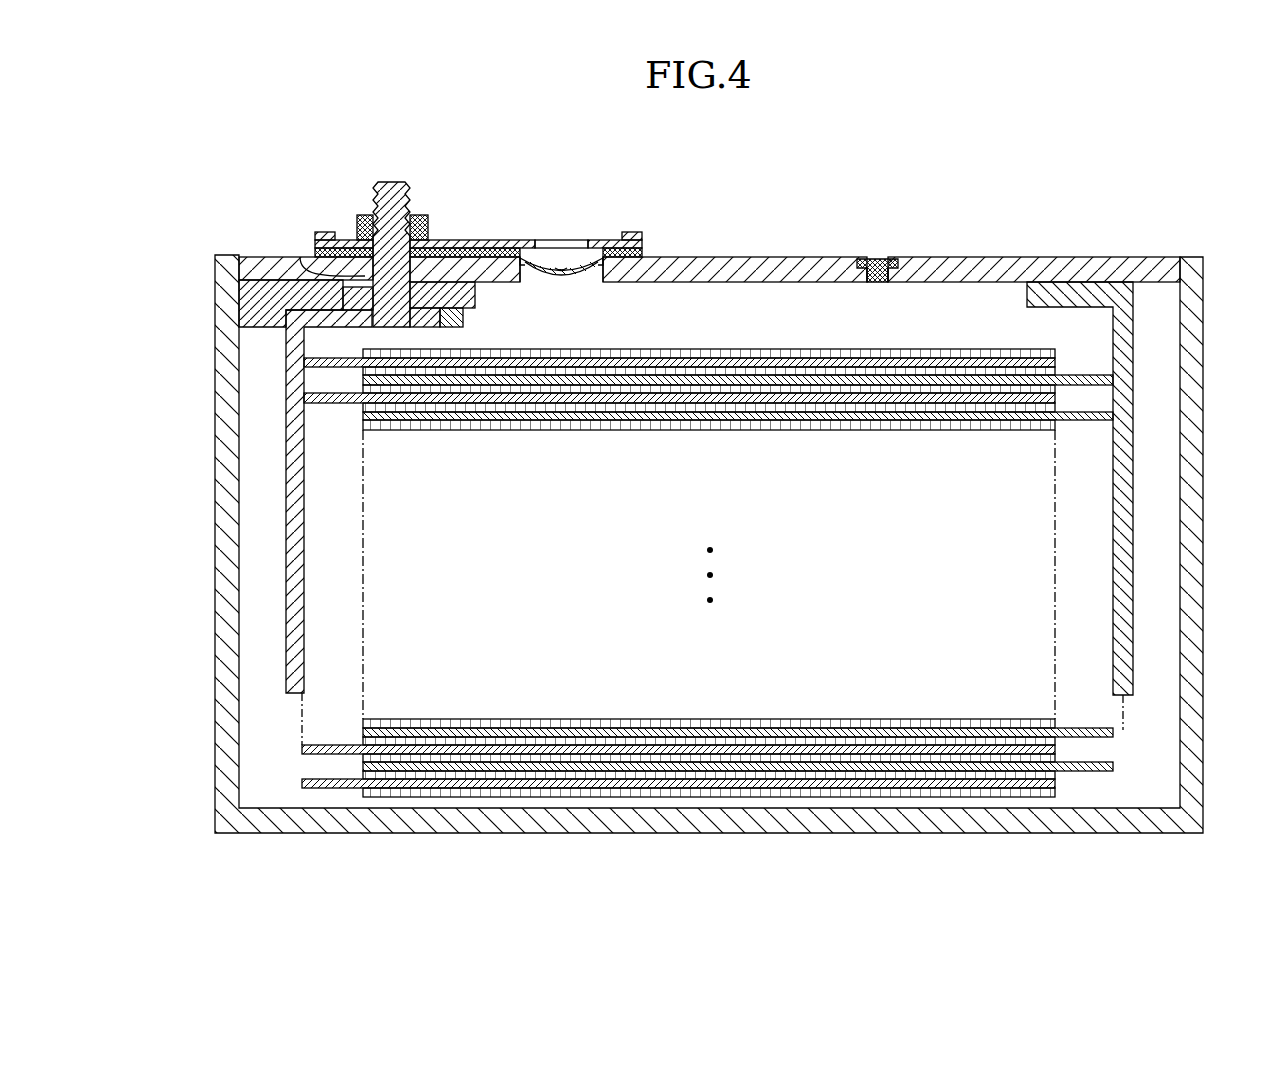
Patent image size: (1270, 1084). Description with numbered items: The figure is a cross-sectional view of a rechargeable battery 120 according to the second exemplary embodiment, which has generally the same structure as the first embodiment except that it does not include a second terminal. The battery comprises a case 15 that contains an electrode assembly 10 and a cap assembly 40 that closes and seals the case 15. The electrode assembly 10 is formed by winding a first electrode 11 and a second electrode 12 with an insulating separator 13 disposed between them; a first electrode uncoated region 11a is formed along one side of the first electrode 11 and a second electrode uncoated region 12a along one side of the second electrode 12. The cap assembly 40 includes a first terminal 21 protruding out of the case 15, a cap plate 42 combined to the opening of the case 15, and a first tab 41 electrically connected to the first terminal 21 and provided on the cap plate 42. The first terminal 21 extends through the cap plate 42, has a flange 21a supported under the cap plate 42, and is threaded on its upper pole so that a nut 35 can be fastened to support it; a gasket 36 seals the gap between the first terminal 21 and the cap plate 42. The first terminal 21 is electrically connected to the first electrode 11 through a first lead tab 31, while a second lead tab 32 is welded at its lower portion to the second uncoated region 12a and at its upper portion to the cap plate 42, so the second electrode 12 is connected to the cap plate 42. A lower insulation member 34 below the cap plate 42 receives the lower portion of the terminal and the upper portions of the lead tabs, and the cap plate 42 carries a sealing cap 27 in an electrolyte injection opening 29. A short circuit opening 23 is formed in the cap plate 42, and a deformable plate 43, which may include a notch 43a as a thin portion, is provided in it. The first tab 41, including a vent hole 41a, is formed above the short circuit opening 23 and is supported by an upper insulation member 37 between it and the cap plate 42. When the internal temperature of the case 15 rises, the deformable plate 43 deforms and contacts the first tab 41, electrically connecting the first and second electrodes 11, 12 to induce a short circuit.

The rechargeable battery 120 is at (810, 158).
The electrode assembly 10 is at (713, 621).
The first electrode 11 is at (678, 625).
The first electrode uncoated region 11a is at (318, 785).
The second electrode 12 is at (743, 634).
The second electrode uncoated region 12a is at (1085, 770).
The separator 13 is at (665, 795).
The case 15 is at (1193, 530).
The first terminal 21 is at (388, 182).
The flange 21a is at (443, 302).
The short circuit opening 23 is at (598, 272).
The sealing cap 27 is at (875, 259).
The electrolyte injection opening 29 is at (877, 282).
The first lead tab 31 is at (296, 545).
The second lead tab 32 is at (1125, 632).
The lower insulation member 34 is at (262, 300).
The nut 35 is at (420, 215).
The gasket 36 is at (300, 257).
The upper insulation member 37 is at (632, 232).
The cap assembly 40 is at (709, 227).
The first tab 41 is at (475, 240).
The vent hole 41a is at (588, 244).
The cap plate 42 is at (1120, 268).
The deformable plate 43 is at (520, 255).
The notch 43a is at (558, 268).